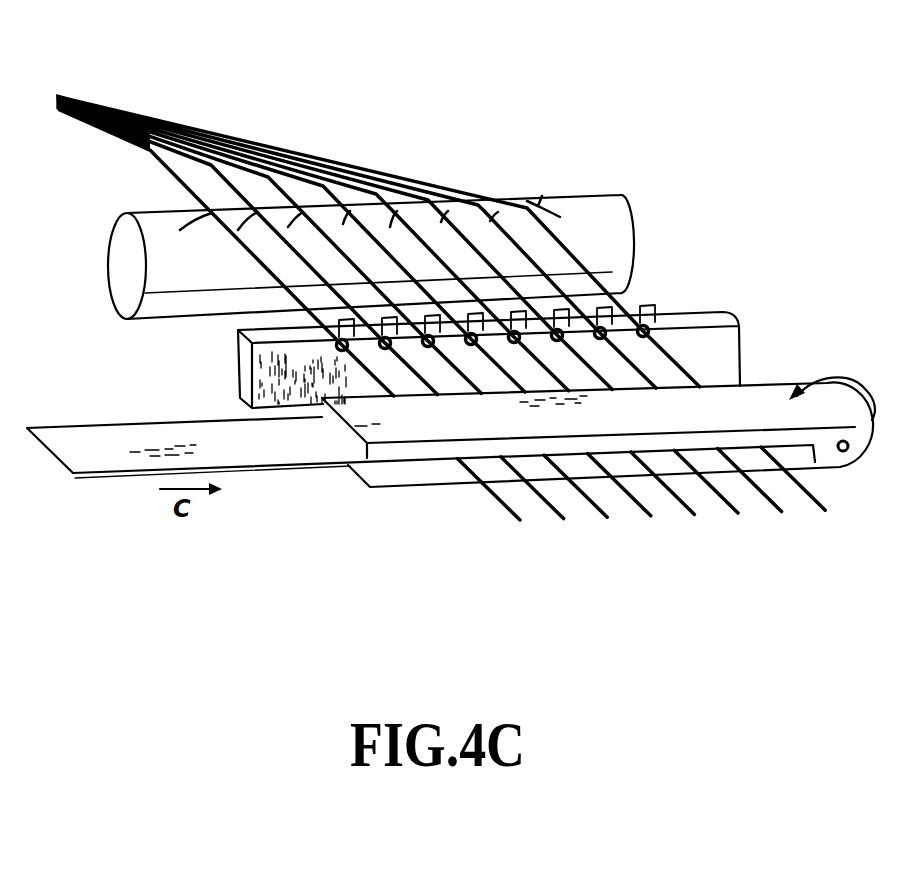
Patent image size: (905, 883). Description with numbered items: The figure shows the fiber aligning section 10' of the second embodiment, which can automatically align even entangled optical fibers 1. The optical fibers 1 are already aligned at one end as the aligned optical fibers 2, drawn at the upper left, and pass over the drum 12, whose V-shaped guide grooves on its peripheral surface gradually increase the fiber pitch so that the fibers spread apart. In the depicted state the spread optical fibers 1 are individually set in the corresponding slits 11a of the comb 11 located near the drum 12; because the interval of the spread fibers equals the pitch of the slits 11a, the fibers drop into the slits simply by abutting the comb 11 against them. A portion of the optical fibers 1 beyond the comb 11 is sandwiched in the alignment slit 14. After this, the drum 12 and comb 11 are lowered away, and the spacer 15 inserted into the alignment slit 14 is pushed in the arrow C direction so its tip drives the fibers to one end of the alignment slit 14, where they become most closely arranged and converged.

The optical fibers 1 is at (493, 498).
The aligned optical fibers 2 is at (102, 107).
The fiber aligning section 10' is at (749, 126).
The comb 11 is at (720, 312).
The slits 11a is at (640, 316).
The drum 12 is at (603, 208).
The alignment slit 14 is at (768, 396).
The spacer 15 is at (104, 440).